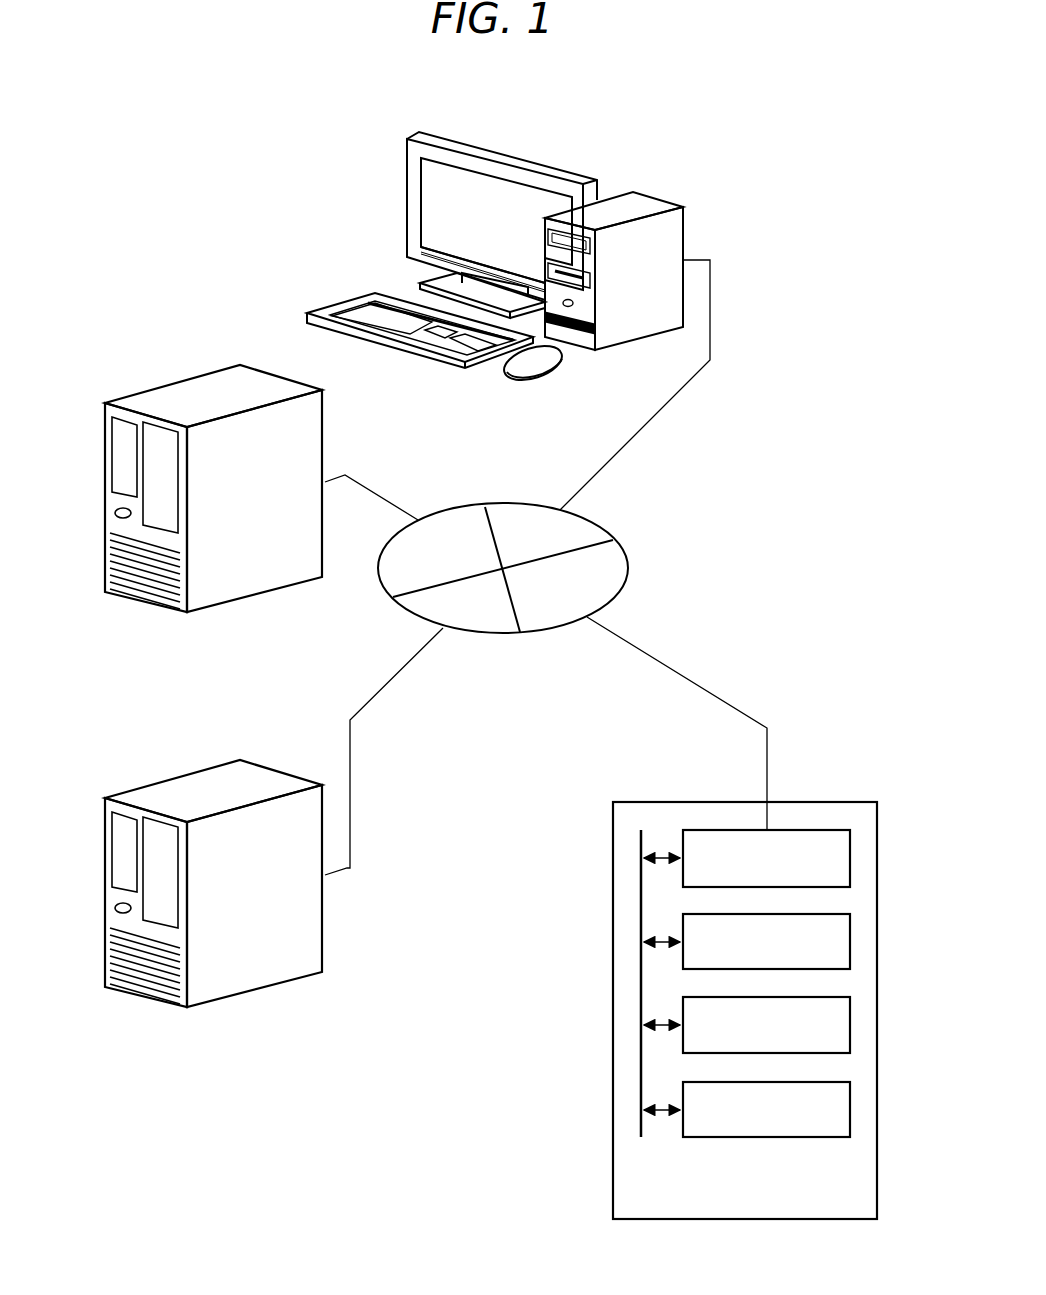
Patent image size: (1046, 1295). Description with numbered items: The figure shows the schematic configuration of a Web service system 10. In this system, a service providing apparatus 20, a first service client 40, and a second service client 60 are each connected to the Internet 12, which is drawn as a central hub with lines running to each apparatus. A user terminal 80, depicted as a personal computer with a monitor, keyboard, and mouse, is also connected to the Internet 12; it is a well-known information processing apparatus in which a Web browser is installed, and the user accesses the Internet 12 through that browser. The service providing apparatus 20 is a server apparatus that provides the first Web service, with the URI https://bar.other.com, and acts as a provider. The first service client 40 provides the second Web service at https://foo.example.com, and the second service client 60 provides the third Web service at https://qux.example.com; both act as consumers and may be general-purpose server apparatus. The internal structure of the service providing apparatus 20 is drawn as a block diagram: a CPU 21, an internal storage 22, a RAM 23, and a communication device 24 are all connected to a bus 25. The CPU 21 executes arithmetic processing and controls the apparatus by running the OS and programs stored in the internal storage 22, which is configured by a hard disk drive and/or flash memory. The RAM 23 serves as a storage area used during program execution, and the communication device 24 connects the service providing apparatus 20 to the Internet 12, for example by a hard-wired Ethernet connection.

The Web service system 10 is at (110, 184).
The Internet 12 is at (628, 568).
The service providing apparatus 20 is at (837, 802).
The CPU 21 is at (850, 942).
The internal storage 22 is at (850, 1025).
The RAM 23 is at (850, 1110).
The communication device 24 is at (850, 858).
The bus 25 is at (643, 841).
The first service client 40 is at (207, 380).
The second service client 60 is at (215, 790).
The user terminal 80 is at (366, 214).